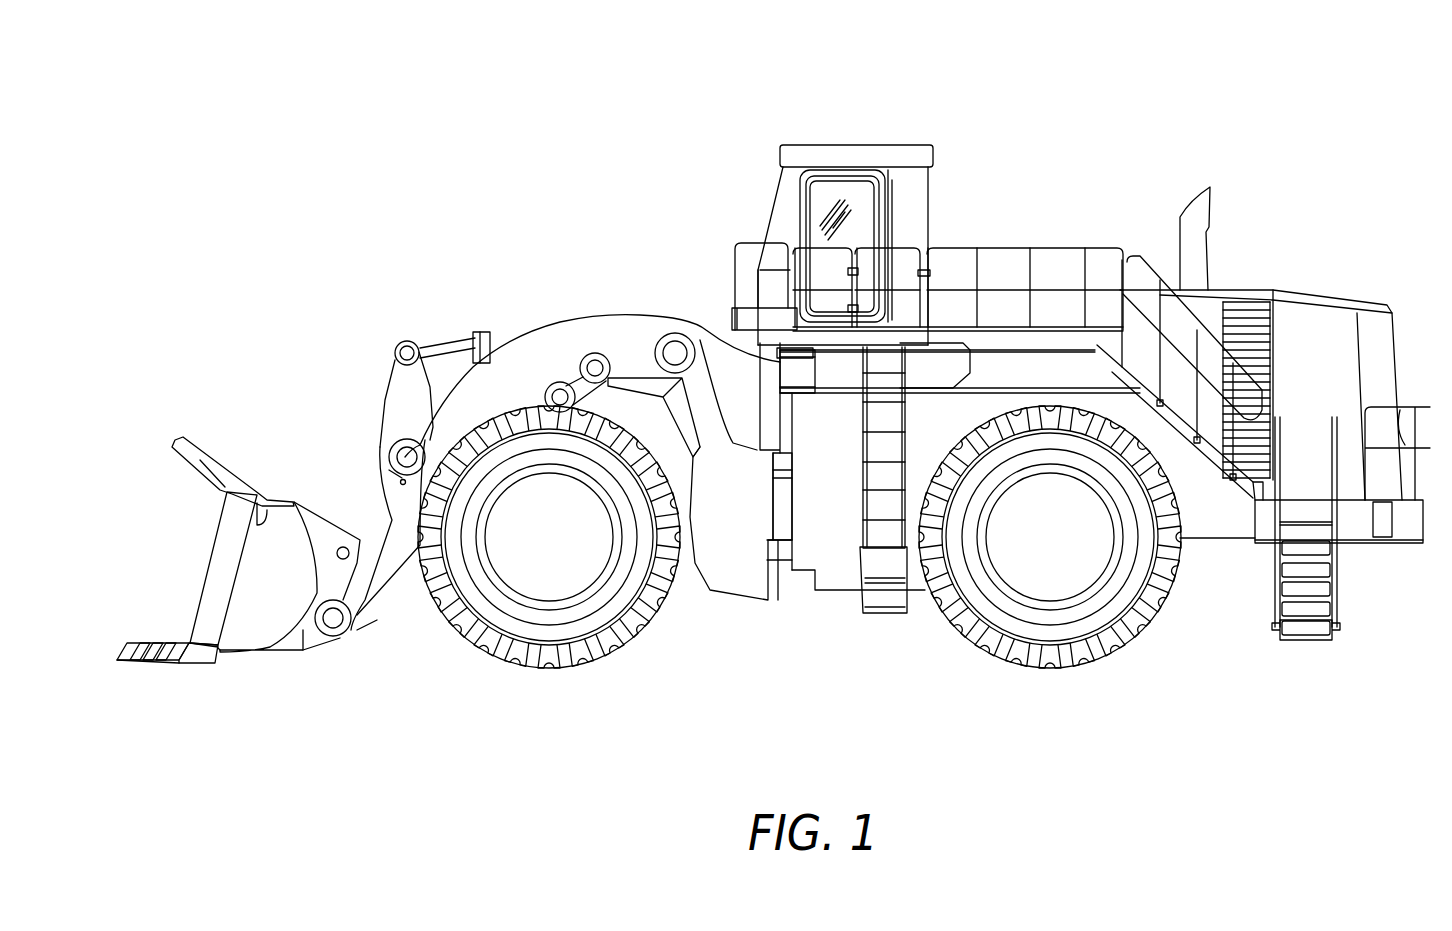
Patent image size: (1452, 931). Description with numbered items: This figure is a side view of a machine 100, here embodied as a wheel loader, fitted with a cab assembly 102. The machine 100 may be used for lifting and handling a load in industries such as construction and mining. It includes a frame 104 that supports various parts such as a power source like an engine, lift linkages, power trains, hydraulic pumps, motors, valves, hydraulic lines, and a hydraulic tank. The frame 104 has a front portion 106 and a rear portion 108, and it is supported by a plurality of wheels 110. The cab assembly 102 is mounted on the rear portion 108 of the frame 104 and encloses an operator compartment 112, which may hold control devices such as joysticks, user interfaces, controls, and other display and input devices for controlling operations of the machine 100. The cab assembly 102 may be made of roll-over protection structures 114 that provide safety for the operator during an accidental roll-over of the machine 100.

The machine 100 is at (272, 107).
The cab assembly 102 is at (766, 151).
The frame 104 is at (833, 592).
The front portion 106 is at (785, 702).
The rear portion 108 is at (1340, 702).
The wheels 110 is at (470, 635).
The operator compartment 112 is at (851, 215).
The roll-over protection structures 114 is at (884, 208).